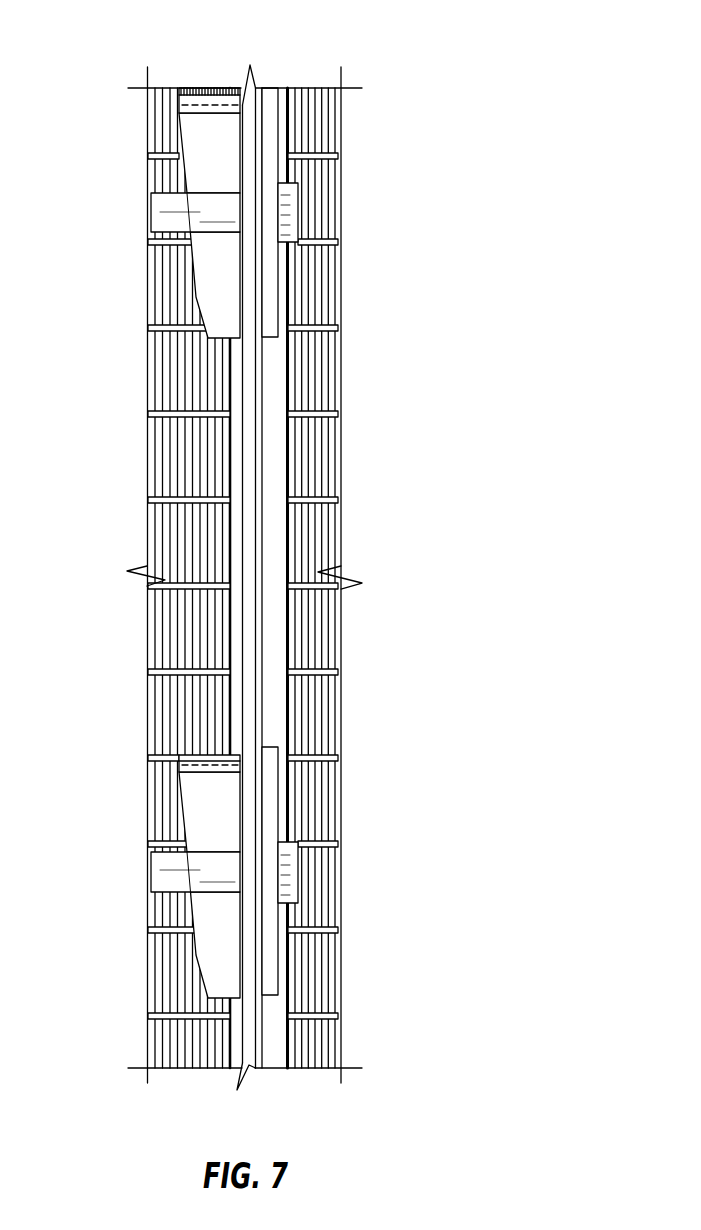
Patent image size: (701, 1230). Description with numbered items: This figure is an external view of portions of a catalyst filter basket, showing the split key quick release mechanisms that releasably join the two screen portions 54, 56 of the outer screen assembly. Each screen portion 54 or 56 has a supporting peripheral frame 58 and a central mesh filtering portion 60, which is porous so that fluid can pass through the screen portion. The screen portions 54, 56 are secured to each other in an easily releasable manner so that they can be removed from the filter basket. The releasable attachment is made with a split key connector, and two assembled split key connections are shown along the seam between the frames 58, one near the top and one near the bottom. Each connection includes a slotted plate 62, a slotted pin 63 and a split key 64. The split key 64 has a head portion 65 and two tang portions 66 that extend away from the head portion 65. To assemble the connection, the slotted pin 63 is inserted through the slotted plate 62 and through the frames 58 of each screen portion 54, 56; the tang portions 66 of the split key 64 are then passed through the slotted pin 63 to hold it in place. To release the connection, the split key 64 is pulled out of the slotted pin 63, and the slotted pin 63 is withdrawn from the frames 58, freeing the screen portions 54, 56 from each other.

The screen portion 54 is at (160, 373).
The screen portion 56 is at (328, 440).
The supporting peripheral frame 58 is at (272, 373).
The central mesh filtering portion 60 is at (160, 1045).
The slotted plate 62 is at (272, 97).
The slotted pin 63 is at (165, 205).
The split key 64 is at (196, 137).
The head portion 65 is at (215, 100).
The tang portions 66 is at (210, 258).